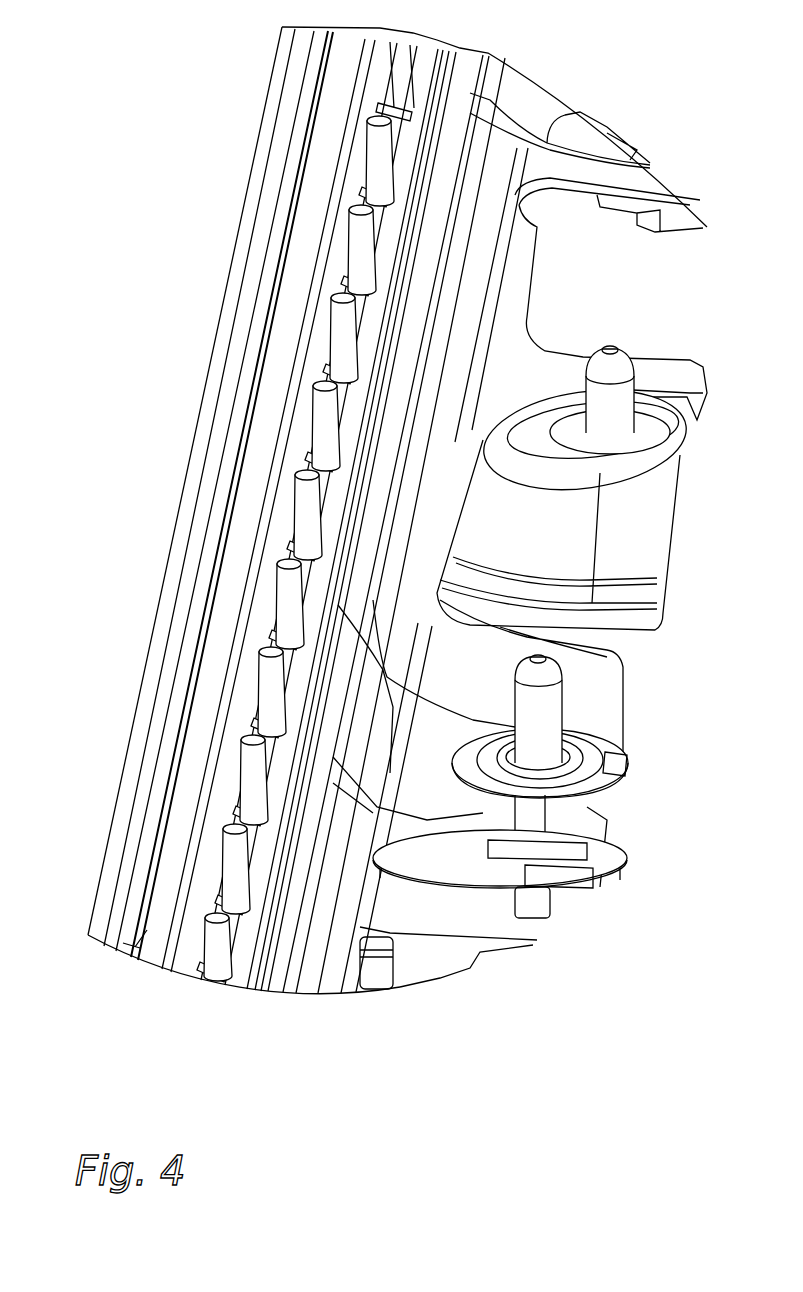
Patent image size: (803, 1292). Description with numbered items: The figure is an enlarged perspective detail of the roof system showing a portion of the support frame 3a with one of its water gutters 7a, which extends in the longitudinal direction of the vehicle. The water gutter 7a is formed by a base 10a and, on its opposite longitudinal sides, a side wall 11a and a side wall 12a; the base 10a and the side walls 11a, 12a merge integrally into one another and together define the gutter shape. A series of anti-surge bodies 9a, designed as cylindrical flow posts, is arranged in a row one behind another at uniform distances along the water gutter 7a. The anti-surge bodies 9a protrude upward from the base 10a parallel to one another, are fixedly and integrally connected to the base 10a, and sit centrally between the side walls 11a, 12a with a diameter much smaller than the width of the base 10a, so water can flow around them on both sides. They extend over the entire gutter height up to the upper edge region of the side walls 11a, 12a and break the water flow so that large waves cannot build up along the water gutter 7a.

The support frame 3a is at (560, 297).
The water gutter 7a is at (187, 952).
The anti-surge bodies 9a is at (277, 578).
The base 10a is at (236, 985).
The side wall 11a is at (118, 938).
The side wall 12a is at (390, 343).